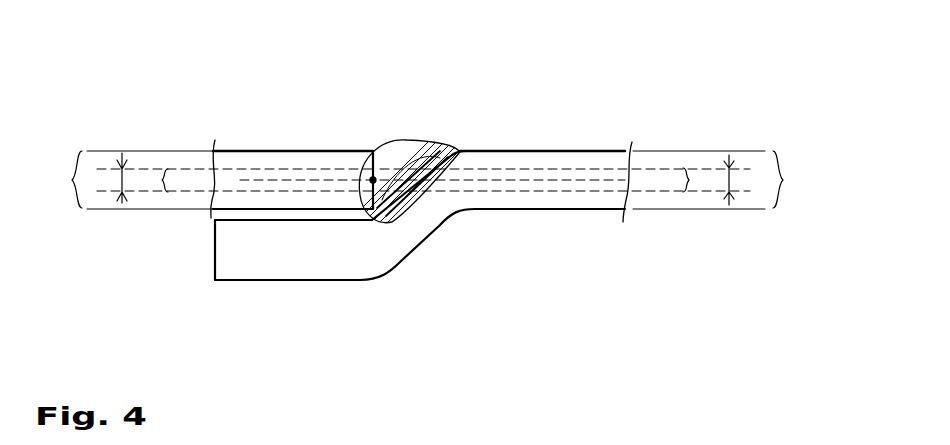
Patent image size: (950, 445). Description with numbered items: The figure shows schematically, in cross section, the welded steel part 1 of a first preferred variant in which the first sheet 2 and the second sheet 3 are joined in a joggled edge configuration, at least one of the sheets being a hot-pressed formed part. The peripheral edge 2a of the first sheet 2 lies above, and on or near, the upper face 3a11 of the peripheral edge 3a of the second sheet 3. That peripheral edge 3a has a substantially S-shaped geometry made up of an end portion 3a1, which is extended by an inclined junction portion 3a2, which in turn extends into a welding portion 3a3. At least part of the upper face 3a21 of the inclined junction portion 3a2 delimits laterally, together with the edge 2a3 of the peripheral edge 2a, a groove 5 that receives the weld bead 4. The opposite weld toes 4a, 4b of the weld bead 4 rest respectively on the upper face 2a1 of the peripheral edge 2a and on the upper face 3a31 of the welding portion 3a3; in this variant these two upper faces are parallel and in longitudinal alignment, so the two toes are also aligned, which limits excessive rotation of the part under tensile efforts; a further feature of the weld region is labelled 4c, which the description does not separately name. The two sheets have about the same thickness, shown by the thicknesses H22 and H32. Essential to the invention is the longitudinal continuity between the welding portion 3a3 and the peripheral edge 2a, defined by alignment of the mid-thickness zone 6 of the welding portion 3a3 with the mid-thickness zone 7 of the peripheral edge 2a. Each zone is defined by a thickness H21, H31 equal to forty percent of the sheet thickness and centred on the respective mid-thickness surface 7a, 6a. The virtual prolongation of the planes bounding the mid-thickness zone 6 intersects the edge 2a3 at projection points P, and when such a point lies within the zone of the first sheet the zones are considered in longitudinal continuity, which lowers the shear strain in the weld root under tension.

The welded steel part 1 is at (516, 92).
The first sheet 2 is at (250, 90).
The peripheral edge of the first sheet 2a is at (238, 122).
The upper face of the peripheral edge of the first sheet 2a1 is at (302, 151).
The edge of the peripheral edge of the first sheet 2a3 is at (398, 157).
The second sheet 3 is at (617, 115).
The peripheral edge of the second sheet 3a is at (480, 294).
The end portion 3a1 is at (302, 253).
The upper face of the peripheral edge of the second sheet 3a11 is at (292, 220).
The inclined junction portion 3a2 is at (417, 223).
The upper face of the inclined junction portion 3a21 is at (376, 221).
The welding portion 3a3 is at (553, 210).
The upper face of the welding portion 3a31 is at (565, 151).
The weld bead 4 is at (427, 160).
The weld toe 4a is at (373, 152).
The weld toe 4b is at (459, 152).
The weld root 4c is at (376, 212).
The groove 5 is at (380, 222).
The mid-thickness zone of the welding portion 6 is at (695, 180).
The mid-thickness surface of the second sheet 6a is at (602, 196).
The mid-thickness zone of the peripheral edge of the first sheet 7 is at (155, 180).
The mid-thickness surface of the first sheet 7a is at (240, 179).
The projection point P is at (377, 178).
The thickness of the mid-thickness zone of the first sheet H21 is at (121, 180).
The thickness of the first sheet H22 is at (55, 179).
The thickness of the mid-thickness zone of the second sheet H31 is at (731, 178).
The thickness of the second sheet H32 is at (809, 179).